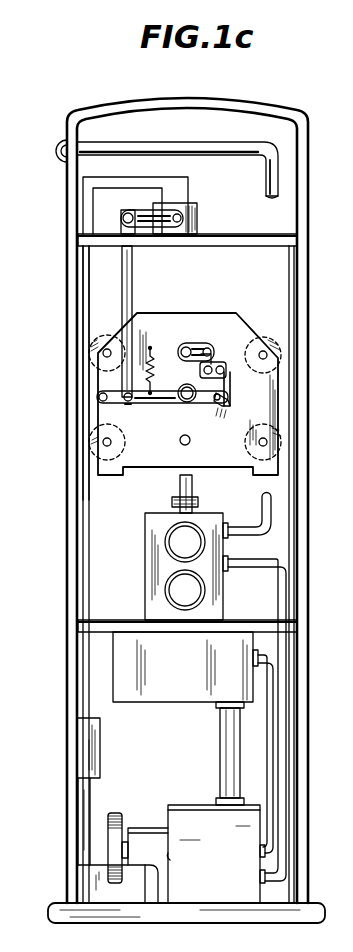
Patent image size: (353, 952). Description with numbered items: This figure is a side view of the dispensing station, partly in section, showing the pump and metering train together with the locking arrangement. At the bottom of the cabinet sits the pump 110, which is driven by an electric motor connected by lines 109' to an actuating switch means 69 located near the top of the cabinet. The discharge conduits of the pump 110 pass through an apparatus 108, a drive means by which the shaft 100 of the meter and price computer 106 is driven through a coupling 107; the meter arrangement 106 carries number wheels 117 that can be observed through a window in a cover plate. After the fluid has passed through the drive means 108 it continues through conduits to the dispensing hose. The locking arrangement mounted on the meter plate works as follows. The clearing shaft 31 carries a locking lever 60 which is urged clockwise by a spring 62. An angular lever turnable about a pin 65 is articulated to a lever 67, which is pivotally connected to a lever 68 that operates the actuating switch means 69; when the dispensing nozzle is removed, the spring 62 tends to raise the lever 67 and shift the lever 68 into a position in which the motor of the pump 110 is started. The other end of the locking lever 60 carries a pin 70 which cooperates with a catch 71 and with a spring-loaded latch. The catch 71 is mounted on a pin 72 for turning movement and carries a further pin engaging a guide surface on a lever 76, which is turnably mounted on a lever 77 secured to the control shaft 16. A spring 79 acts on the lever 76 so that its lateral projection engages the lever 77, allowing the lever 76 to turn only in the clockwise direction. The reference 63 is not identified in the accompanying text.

The control shaft 16 is at (178, 352).
The clearing shaft 31 is at (188, 405).
The locking lever 60 is at (161, 409).
The spring 62 is at (156, 368).
The link end 63 is at (127, 405).
The pin 65 is at (99, 395).
The lever 67 is at (133, 266).
The lever 68 is at (138, 213).
The actuating switch means 69 is at (198, 221).
The pin 70 is at (232, 403).
The catch 71 is at (236, 381).
The pin 72 is at (221, 365).
The lever 76 is at (211, 349).
The lever 77 is at (183, 345).
The spring 79 is at (202, 345).
The shaft 100 is at (179, 483).
The meter and price computer 106 is at (272, 393).
The coupling 107 is at (199, 502).
The apparatus 108 is at (145, 561).
The lines 109' is at (58, 373).
The pump 110 is at (187, 808).
The number wheels 117 is at (100, 350).